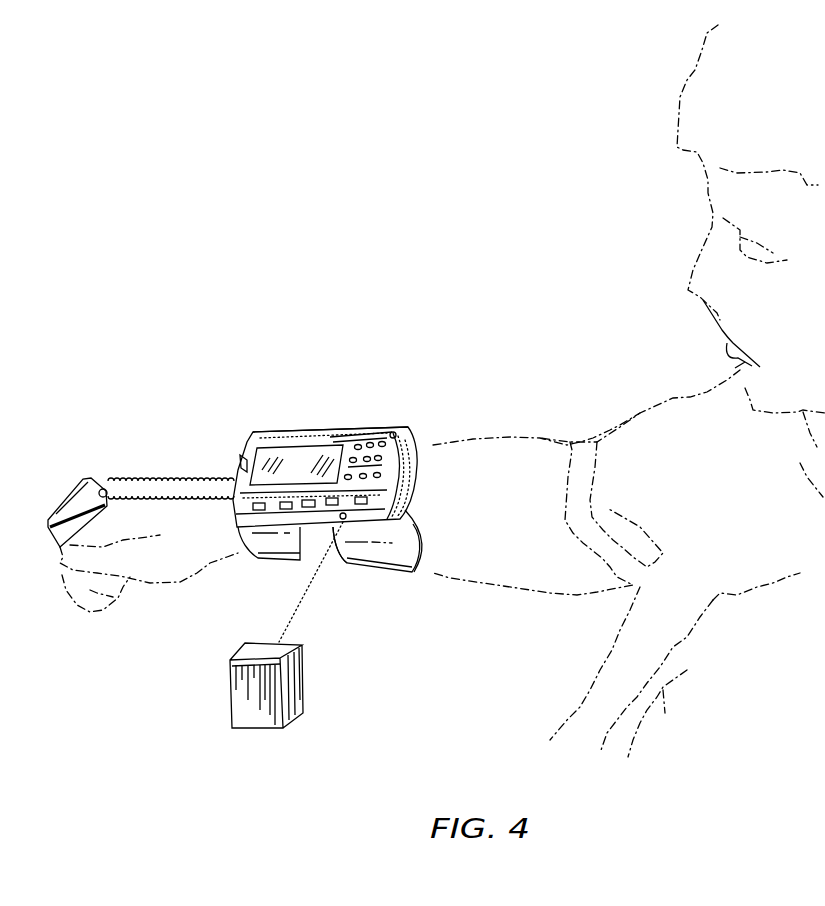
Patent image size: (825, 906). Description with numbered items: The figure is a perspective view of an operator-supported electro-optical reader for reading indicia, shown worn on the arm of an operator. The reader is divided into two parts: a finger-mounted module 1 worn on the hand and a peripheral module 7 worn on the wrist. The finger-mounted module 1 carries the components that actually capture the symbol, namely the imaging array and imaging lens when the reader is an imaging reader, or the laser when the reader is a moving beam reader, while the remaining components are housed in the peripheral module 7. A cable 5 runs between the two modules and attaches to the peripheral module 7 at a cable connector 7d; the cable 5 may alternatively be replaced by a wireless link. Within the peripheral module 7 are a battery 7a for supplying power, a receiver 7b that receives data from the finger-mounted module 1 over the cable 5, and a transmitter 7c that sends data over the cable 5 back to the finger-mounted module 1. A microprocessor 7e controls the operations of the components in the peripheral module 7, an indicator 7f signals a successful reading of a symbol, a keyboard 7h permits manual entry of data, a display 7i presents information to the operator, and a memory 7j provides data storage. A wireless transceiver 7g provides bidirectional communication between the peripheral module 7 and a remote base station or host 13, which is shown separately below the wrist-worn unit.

The finger-mounted module 1 is at (90, 478).
The cable 5 is at (155, 480).
The peripheral module 7 is at (337, 430).
The battery 7a is at (288, 437).
The receiver 7b is at (287, 510).
The transmitter 7c is at (258, 511).
The cable connector 7d is at (244, 468).
The microprocessor 7e is at (413, 572).
The indicator 7f is at (396, 433).
The wireless transceiver 7g is at (347, 566).
The keyboard 7h is at (370, 443).
The display 7i is at (300, 457).
The memory 7j is at (413, 448).
The remote base station or host 13 is at (293, 698).